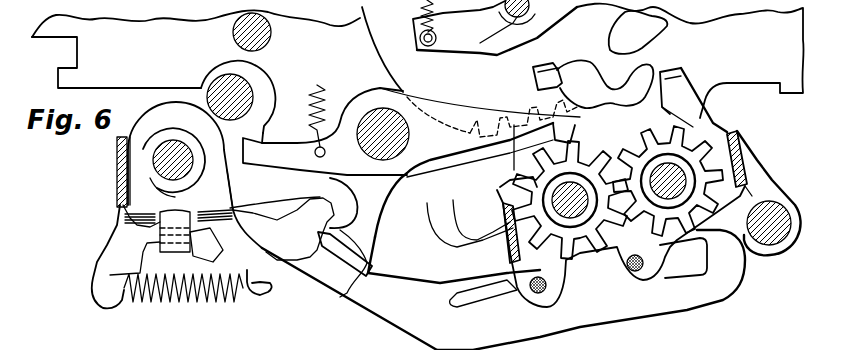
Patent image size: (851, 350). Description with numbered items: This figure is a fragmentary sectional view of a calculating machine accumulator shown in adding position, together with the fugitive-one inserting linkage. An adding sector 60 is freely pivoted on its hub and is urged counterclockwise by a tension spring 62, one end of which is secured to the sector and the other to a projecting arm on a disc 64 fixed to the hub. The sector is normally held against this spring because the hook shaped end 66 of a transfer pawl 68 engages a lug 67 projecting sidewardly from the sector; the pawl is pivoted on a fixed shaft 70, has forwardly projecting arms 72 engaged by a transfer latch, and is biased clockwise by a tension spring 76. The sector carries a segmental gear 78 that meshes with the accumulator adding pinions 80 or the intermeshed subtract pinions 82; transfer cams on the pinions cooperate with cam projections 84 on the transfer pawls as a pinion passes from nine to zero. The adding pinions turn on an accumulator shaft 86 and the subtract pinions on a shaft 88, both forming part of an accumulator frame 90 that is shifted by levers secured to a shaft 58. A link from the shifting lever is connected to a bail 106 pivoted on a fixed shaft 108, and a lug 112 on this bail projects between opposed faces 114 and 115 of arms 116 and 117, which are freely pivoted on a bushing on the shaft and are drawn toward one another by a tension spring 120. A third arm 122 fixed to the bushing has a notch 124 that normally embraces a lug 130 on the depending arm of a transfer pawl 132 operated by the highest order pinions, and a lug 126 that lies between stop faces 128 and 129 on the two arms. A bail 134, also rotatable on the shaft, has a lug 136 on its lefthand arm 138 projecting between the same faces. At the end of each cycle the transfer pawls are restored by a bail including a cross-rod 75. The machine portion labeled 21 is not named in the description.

The frame 21 is at (67, 68).
The shaft 58 is at (510, 25).
The adding sector 60 is at (660, 35).
The tension spring 62 is at (413, 20).
The disc 64 is at (547, 25).
The hook shaped end 66 is at (660, 57).
The lug 67 is at (556, 70).
The transfer pawl 68 is at (457, 107).
The fixed shaft 70 is at (387, 110).
The forwardly projecting arms 72 is at (283, 150).
The cross-rod 75 is at (220, 82).
The tension spring 76 is at (317, 85).
The segmental gear 78 is at (687, 78).
The accumulator adding pinions 80 is at (512, 182).
The subtract pinions 82 is at (697, 127).
The cam projections 84 is at (580, 138).
The accumulator shaft 86 is at (510, 257).
The shaft 88 is at (740, 147).
The accumulator frame 90 is at (760, 190).
The bail 106 is at (115, 168).
The fixed shaft 108 is at (167, 142).
The lug 112 is at (213, 257).
The face 114 is at (143, 258).
The face 115 is at (207, 243).
The arm 116 is at (100, 265).
The arm 117 is at (243, 255).
The tension spring 120 is at (167, 307).
The third arm 122 is at (318, 255).
The notch 124 is at (330, 220).
The lug 126 is at (123, 220).
The stop face 128 is at (143, 238).
The stop face 129 is at (225, 207).
The lug 130 is at (358, 267).
The transfer pawl 132 is at (373, 230).
The bail 134 is at (117, 145).
The lug 136 is at (97, 267).
The lefthand arm 138 is at (157, 123).